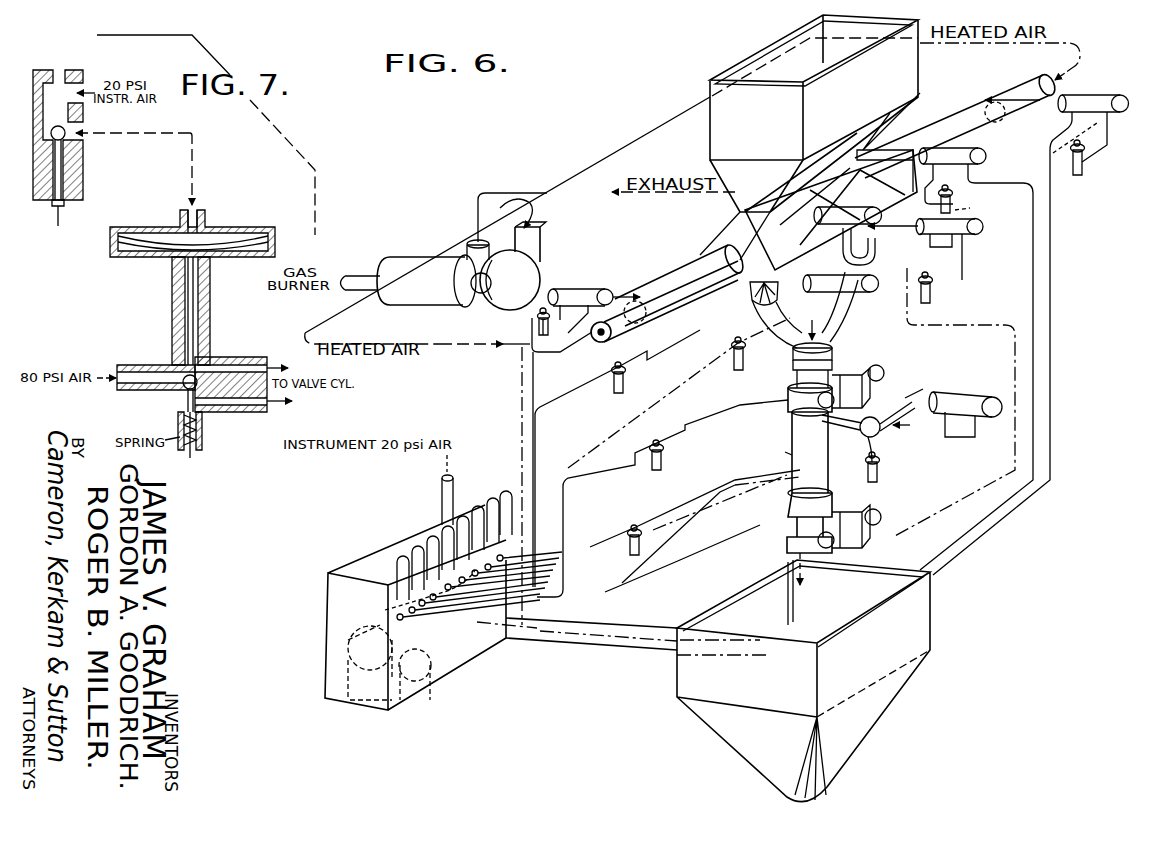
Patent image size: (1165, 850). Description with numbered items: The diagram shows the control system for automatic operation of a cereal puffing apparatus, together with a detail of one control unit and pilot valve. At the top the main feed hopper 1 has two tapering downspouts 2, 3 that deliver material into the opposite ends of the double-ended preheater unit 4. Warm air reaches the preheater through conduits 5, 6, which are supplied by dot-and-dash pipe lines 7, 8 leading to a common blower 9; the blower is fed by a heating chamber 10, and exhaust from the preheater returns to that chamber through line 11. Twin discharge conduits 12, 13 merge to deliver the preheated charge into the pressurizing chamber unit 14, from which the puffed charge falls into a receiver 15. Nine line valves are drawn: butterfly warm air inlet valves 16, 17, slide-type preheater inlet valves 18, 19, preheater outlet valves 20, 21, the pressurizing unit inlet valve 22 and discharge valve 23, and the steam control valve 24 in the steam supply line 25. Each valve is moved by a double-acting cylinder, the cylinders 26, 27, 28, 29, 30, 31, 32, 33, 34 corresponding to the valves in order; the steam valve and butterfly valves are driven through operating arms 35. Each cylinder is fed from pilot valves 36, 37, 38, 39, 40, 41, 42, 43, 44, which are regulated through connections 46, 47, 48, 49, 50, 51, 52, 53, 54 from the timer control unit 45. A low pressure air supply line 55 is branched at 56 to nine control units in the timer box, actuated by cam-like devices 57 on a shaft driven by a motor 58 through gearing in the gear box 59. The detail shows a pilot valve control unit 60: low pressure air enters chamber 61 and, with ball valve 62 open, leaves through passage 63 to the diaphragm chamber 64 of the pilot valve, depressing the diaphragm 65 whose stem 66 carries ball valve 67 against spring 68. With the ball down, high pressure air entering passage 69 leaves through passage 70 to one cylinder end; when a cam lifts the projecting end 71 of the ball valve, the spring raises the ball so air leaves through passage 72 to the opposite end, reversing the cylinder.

In FIG. 6, the main feed hopper 1 is at (735, 125).
In FIG. 6, the downspout 2 is at (728, 173).
In FIG. 6, the downspout 3 is at (900, 125).
In FIG. 6, the preheater unit 4 is at (831, 210).
In FIG. 6, the warm air conduit 5 is at (682, 276).
In FIG. 6, the warm air conduit 6 is at (962, 112).
In FIG. 6, the pipe line 7 is at (433, 345).
In FIG. 6, the pipe line 8 is at (620, 143).
In FIG. 6, the blower 9 is at (525, 272).
In FIG. 6, the heating chamber 10 is at (398, 258).
In FIG. 6, the exhaust return line 11 is at (500, 190).
In FIG. 6, the discharge conduit 12 is at (777, 322).
In FIG. 6, the discharge conduit 13 is at (862, 267).
In FIG. 6, the pressurizing chamber unit 14 is at (818, 442).
In FIG. 6, the receiver 15 is at (875, 700).
In FIG. 6, the warm air inlet valve 16 is at (648, 322).
In FIG. 6, the warm air inlet valve 17 is at (997, 124).
In FIG. 6, the preheater inlet valve 18 is at (775, 212).
In FIG. 6, the preheater inlet valve 19 is at (893, 152).
In FIG. 6, the preheater outlet valve 20 is at (748, 292).
In FIG. 6, the preheater outlet valve 21 is at (882, 222).
In FIG. 6, the inlet valve 22 is at (788, 400).
In FIG. 6, the discharge valve 23 is at (797, 527).
In FIG. 6, the steam control valve 24 is at (874, 442).
In FIG. 6, the steam supply line 25 is at (858, 413).
In FIG. 6, the pneumatic cylinder 26 is at (575, 290).
In FIG. 6, the pneumatic cylinder 27 is at (1090, 97).
In FIG. 6, the pneumatic cylinder 28 is at (840, 215).
In FIG. 6, the pneumatic cylinder 29 is at (942, 148).
In FIG. 6, the pneumatic cylinder 30 is at (866, 292).
In FIG. 6, the pneumatic cylinder 31 is at (953, 228).
In FIG. 6, the pneumatic cylinder 32 is at (866, 380).
In FIG. 6, the pneumatic cylinder 33 is at (870, 525).
In FIG. 6, the pneumatic cylinder 34 is at (960, 395).
In FIG. 6, the operating arm 35 is at (636, 295).
In FIG. 7, the pilot valve 36 is at (172, 306).
In FIG. 6, the pilot valve 36 is at (531, 353).
In FIG. 6, the pilot valve 37 is at (1081, 176).
In FIG. 6, the pilot valve 38 is at (616, 393).
In FIG. 6, the pilot valve 39 is at (958, 196).
In FIG. 6, the pilot valve 40 is at (738, 370).
In FIG. 6, the pilot valve 41 is at (937, 300).
In FIG. 6, the pilot valve 42 is at (660, 470).
In FIG. 6, the pilot valve 43 is at (633, 554).
In FIG. 6, the pilot valve 44 is at (877, 482).
In FIG. 6, the timer control unit 45 is at (327, 622).
In FIG. 7, the pilot valve connection 46 is at (191, 160).
In FIG. 6, the pilot valve connection 46 is at (525, 628).
In FIG. 6, the pilot valve connection 47 is at (592, 648).
In FIG. 6, the pilot valve connection 48 is at (535, 587).
In FIG. 6, the pilot valve connection 49 is at (670, 623).
In FIG. 6, the pilot valve connection 50 is at (565, 597).
In FIG. 6, the pilot valve connection 51 is at (612, 633).
In FIG. 6, the pilot valve connection 52 is at (596, 488).
In FIG. 6, the pilot valve connection 53 is at (592, 545).
In FIG. 6, the pilot valve connection 54 is at (618, 593).
In FIG. 6, the low pressure air supply line 55 is at (455, 482).
In FIG. 6, the branch 56 is at (420, 552).
In FIG. 6, the cam-like device 57 is at (345, 660).
In FIG. 6, the motor 58 is at (422, 678).
In FIG. 6, the gear box 59 is at (362, 700).
In FIG. 7, the pilot valve control unit 60 is at (83, 166).
In FIG. 7, the chamber 61 is at (58, 70).
In FIG. 7, the ball valve 62 is at (66, 138).
In FIG. 7, the passage 63 is at (70, 127).
In FIG. 7, the diaphragm chamber 64 is at (212, 238).
In FIG. 7, the diaphragm 65 is at (160, 245).
In FIG. 7, the diaphragm stem 66 is at (188, 279).
In FIG. 7, the ball valve 67 is at (176, 396).
In FIG. 7, the spring 68 is at (202, 432).
In FIG. 7, the passage 69 is at (136, 372).
In FIG. 7, the passage 70 is at (232, 366).
In FIG. 7, the bottom projecting end 71 is at (56, 218).
In FIG. 7, the passage 72 is at (245, 410).